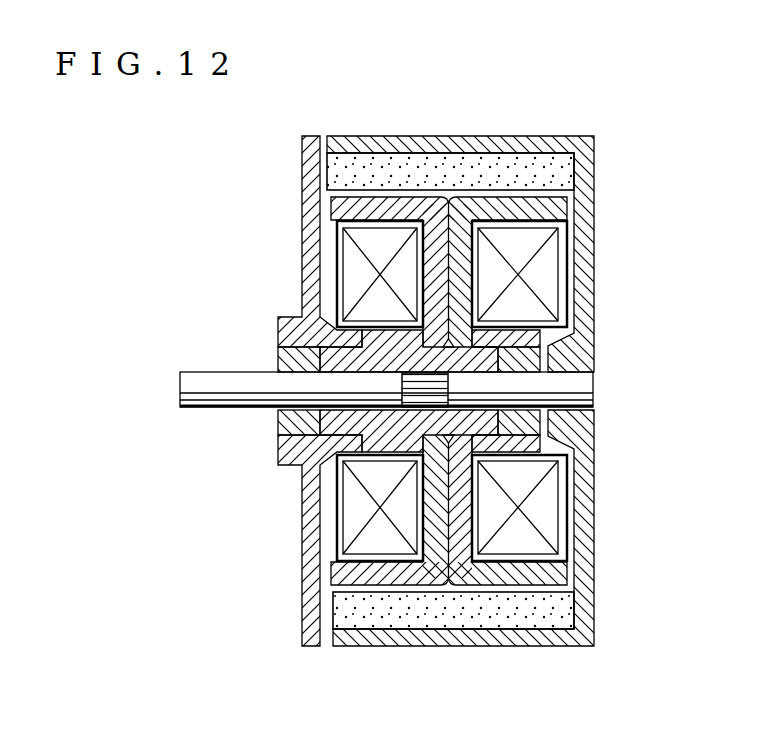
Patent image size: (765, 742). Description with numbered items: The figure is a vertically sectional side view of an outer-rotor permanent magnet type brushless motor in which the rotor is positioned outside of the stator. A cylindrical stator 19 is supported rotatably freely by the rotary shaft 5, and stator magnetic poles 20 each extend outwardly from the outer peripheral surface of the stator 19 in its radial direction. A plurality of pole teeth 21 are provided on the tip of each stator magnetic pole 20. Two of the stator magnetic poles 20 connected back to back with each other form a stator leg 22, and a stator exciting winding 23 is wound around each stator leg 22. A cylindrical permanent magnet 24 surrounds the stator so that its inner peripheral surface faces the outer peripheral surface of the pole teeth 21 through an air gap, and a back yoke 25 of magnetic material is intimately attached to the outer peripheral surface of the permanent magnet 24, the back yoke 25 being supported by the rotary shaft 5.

The rotary shaft 5 is at (581, 389).
The cylindrical stator 19 is at (474, 355).
The stator magnetic pole 20 is at (464, 283).
The pole teeth 21 is at (565, 210).
The stator leg 22 is at (435, 207).
The stator exciting winding 23 is at (549, 259).
The cylindrical permanent magnet 24 is at (571, 175).
The back yoke 25 is at (512, 136).